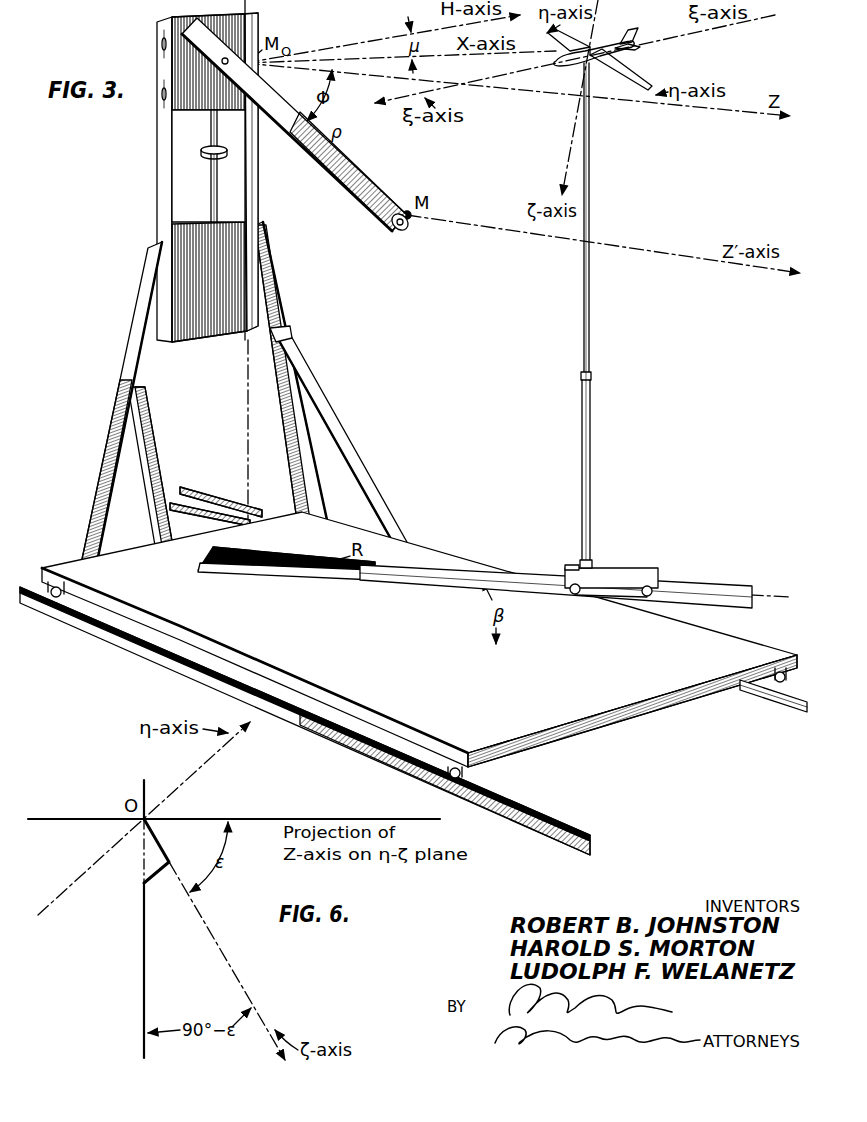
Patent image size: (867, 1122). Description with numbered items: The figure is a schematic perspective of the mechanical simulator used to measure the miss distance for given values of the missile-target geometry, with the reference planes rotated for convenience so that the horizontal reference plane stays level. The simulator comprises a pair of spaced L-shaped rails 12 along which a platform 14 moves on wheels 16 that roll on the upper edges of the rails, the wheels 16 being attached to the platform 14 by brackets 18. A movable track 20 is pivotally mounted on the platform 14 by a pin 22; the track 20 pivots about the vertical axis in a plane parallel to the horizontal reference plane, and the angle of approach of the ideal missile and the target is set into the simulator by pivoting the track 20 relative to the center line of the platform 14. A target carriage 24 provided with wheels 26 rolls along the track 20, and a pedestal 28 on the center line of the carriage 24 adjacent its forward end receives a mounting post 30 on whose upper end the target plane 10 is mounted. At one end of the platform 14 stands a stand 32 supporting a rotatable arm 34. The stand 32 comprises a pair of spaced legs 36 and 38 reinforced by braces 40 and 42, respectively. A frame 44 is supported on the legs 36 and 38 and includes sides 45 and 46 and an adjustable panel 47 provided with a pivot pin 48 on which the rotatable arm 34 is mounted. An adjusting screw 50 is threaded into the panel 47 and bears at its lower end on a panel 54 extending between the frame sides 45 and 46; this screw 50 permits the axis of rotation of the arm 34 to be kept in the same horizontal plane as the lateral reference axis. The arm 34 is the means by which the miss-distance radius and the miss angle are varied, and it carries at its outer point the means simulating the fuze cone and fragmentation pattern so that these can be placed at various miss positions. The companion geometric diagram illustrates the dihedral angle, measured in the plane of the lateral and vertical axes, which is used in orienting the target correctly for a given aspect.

The target plane 10 is at (604, 59).
The L-shaped rails 12 is at (555, 838).
The platform 14 is at (419, 639).
The wheels 16 is at (60, 600).
The brackets 18 is at (50, 592).
The movable track 20 is at (693, 585).
The pin 22 is at (244, 559).
The target carriage 24 is at (622, 572).
The wheels 26 is at (650, 572).
The pedestal 28 is at (592, 518).
The mounting post 30 is at (592, 314).
The stand 32 is at (135, 290).
The rotatable arm 34 is at (330, 165).
The leg 36 is at (95, 483).
The leg 38 is at (286, 465).
The brace 40 is at (147, 472).
The brace 42 is at (396, 485).
The frame 44 is at (160, 148).
The frame side 45 is at (160, 185).
The frame side 46 is at (258, 200).
The adjustable panel 47 is at (208, 62).
The pivot pin 48 is at (226, 58).
The adjusting screw 50 is at (208, 146).
The panel 54 is at (209, 282).